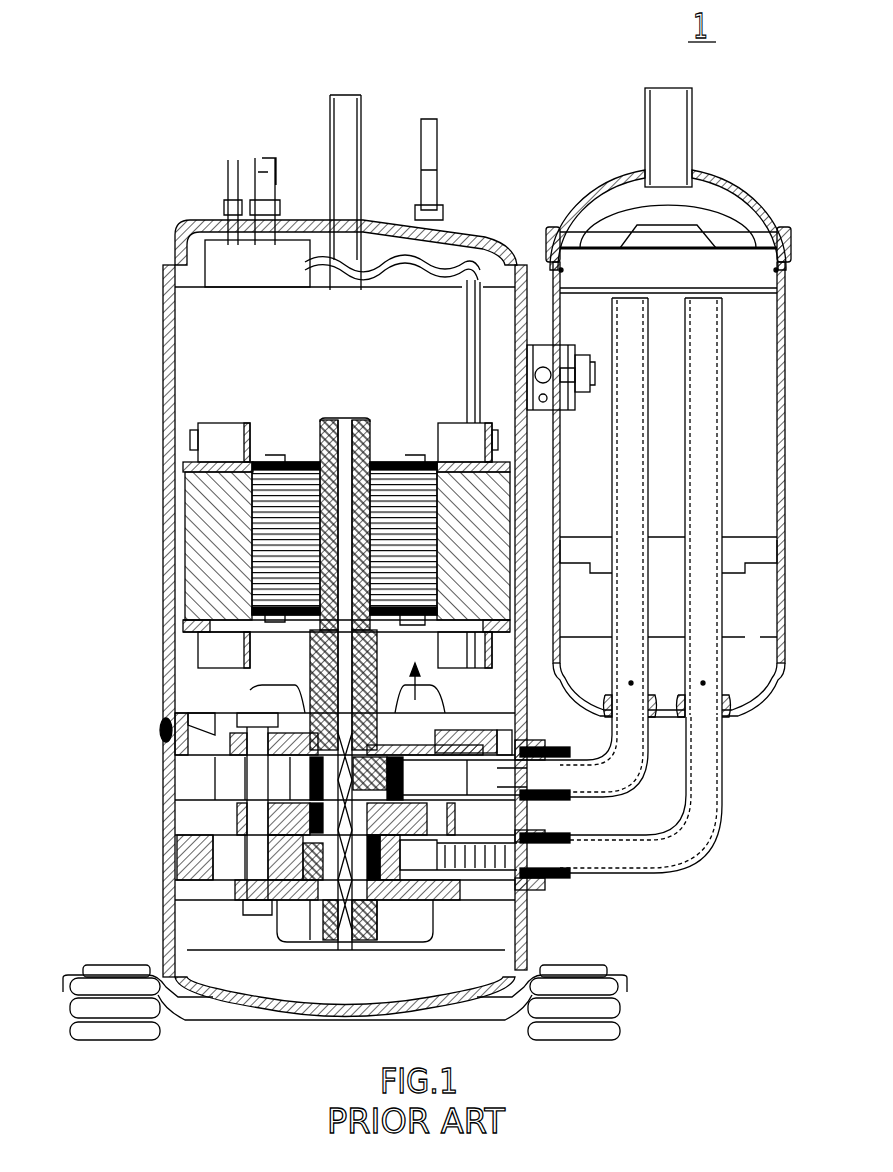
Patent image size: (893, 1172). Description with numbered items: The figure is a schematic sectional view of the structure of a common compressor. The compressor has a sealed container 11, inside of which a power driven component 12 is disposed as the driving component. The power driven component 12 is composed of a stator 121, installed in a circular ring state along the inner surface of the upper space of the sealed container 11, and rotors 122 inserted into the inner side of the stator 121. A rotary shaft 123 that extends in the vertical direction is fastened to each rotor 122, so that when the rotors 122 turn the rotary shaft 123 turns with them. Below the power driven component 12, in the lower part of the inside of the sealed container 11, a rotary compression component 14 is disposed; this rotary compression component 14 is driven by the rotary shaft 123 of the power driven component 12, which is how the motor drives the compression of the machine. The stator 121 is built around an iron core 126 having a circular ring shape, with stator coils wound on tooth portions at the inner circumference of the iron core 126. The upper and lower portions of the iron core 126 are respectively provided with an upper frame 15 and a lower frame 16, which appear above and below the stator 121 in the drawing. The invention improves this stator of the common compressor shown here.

The sealed container 11 is at (170, 310).
The power driven component 12 is at (65, 478).
The stator 121 is at (185, 497).
The rotors 122 is at (270, 566).
The rotary shaft 123 is at (313, 630).
The iron core 126 is at (200, 470).
The rotary compression component 14 is at (228, 815).
The upper frame 15 is at (207, 432).
The lower frame 16 is at (225, 655).